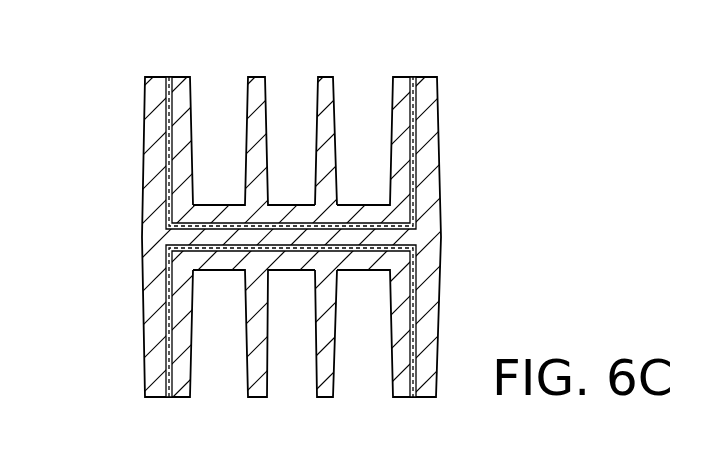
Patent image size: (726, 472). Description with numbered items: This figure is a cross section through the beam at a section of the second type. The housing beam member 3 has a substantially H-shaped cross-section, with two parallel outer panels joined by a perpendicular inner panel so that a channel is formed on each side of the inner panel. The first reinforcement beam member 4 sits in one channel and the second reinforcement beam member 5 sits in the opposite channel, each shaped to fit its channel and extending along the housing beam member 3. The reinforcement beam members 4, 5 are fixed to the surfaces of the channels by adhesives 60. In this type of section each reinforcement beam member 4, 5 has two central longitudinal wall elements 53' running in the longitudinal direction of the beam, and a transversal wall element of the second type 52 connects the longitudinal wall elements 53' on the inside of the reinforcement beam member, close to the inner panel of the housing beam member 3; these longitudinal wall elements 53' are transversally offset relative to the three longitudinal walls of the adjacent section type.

The housing beam member 3 is at (157, 240).
The first reinforcement beam member 4 is at (181, 88).
The second reinforcement beam member 5 is at (178, 386).
The transversal wall element of the second type 52 is at (358, 207).
The longitudinal wall elements 53' is at (350, 241).
The adhesives 60 is at (168, 146).